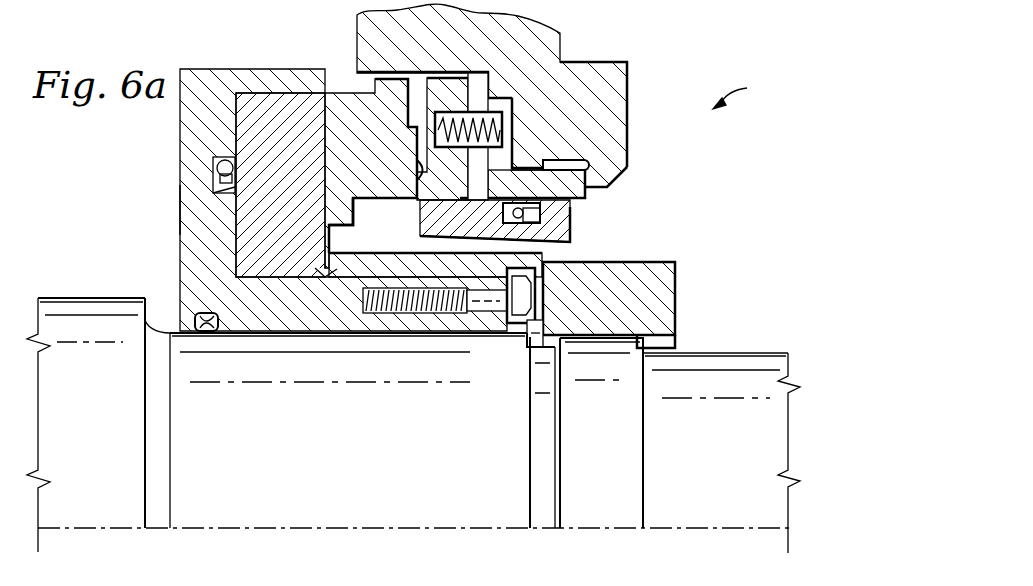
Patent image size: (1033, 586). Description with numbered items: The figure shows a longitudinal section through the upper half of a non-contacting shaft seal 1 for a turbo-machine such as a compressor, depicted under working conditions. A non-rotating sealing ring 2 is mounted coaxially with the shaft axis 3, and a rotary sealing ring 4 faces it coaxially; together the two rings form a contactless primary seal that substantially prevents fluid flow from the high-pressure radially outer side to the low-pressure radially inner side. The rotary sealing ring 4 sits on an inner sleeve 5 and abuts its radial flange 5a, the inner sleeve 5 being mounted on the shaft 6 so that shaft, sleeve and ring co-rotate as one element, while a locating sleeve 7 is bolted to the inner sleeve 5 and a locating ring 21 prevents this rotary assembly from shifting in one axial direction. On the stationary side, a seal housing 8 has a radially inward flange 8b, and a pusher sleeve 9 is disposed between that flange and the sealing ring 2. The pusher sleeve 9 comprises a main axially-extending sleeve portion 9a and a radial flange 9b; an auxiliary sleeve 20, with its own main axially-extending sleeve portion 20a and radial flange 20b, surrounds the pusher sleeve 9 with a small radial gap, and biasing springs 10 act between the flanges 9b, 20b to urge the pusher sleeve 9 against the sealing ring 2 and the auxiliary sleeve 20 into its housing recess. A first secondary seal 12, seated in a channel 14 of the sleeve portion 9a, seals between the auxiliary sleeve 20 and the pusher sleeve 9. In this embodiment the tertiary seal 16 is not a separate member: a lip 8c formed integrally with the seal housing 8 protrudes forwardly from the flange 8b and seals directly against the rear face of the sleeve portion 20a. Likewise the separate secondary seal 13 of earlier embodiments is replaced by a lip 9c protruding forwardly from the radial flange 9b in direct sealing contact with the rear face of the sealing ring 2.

The shaft seal 1 is at (740, 91).
The sealing ring 2 is at (345, 93).
The shaft axis 3 is at (333, 528).
The rotary sealing ring 4 is at (270, 95).
The inner sleeve 5 is at (180, 153).
The radial flange 5a is at (181, 210).
The shaft 6 is at (90, 297).
The locating sleeve 7 is at (347, 248).
The seal housing 8 is at (356, 28).
The radially inward flange 8b is at (614, 138).
The lip 8c is at (626, 172).
The pusher sleeve 9 is at (410, 97).
The main axially-extending sleeve portion 9a is at (566, 216).
The radial flange 9b is at (448, 85).
The lip 9c is at (424, 212).
The biasing spring 10 is at (474, 110).
The first secondary seal 12 is at (540, 210).
The secondary seal 13 is at (416, 166).
The channel 14 is at (500, 211).
The tertiary seal 16 is at (588, 196).
The auxiliary sleeve 20 is at (512, 118).
The main axially-extending sleeve portion 20a is at (547, 165).
The radial flange 20b is at (495, 110).
The locating ring 21 is at (680, 275).